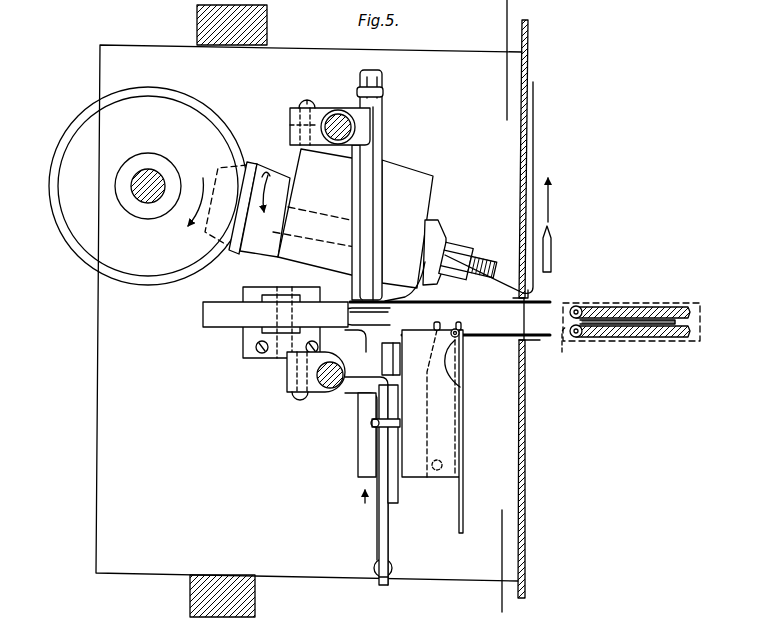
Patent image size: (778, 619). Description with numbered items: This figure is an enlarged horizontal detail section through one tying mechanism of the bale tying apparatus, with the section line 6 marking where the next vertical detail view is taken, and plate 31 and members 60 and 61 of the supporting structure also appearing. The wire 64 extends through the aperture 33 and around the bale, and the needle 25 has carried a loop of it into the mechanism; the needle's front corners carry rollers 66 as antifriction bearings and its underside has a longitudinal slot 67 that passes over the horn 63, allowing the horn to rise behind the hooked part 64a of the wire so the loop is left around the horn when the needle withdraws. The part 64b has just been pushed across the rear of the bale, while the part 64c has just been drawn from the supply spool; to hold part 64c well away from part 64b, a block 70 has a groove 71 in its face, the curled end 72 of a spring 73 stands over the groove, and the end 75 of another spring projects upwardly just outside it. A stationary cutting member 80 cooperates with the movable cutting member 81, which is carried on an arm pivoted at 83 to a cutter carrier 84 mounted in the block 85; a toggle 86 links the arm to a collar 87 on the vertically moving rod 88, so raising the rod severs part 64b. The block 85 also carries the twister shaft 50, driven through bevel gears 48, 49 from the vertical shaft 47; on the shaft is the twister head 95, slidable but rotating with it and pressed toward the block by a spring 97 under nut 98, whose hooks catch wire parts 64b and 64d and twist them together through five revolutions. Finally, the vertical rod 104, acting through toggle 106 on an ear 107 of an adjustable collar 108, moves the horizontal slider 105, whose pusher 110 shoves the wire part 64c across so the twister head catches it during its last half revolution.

The section line 6- 6 is at (521, 42).
The needle 25 is at (649, 309).
The mounting plate 31 is at (530, 64).
The aperture 33 is at (528, 313).
The vertical shaft 47 is at (152, 177).
The bevel gears 48 is at (148, 186).
The bevel gears 49 is at (246, 165).
The twister shaft 50 is at (314, 200).
The support arm 60 is at (275, 322).
The mounting block 61 is at (279, 330).
The horn 63 is at (357, 326).
The wire 64 is at (480, 303).
The wire part 64a is at (342, 315).
The wire part 64b is at (529, 297).
The wire part 64c is at (537, 341).
The wire 64d is at (550, 221).
The rollers 66 is at (585, 308).
The longitudinal slot 67 is at (619, 322).
The block 70 is at (432, 403).
The groove 71 is at (436, 326).
The curled end 72 is at (452, 372).
The spring 73 is at (464, 431).
The end of spring 75 is at (455, 329).
The stationary cutting member 80 is at (350, 287).
The movable cutting member 81 is at (365, 297).
The pivot 83 is at (385, 173).
The cutter carrier 84 is at (383, 233).
The block 85 is at (355, 227).
The toggle 86 is at (383, 80).
The collar 87 is at (320, 107).
The rod 88 is at (338, 116).
The twister head 95 is at (448, 220).
The spring 97 is at (454, 249).
The nut 98 is at (481, 256).
The vertical rod 104 is at (328, 386).
The horizontal slider 105 is at (385, 532).
The toggle 106 is at (373, 550).
The ear 107 is at (386, 397).
The adjustable collar 108 is at (306, 381).
The pusher 110 is at (396, 357).